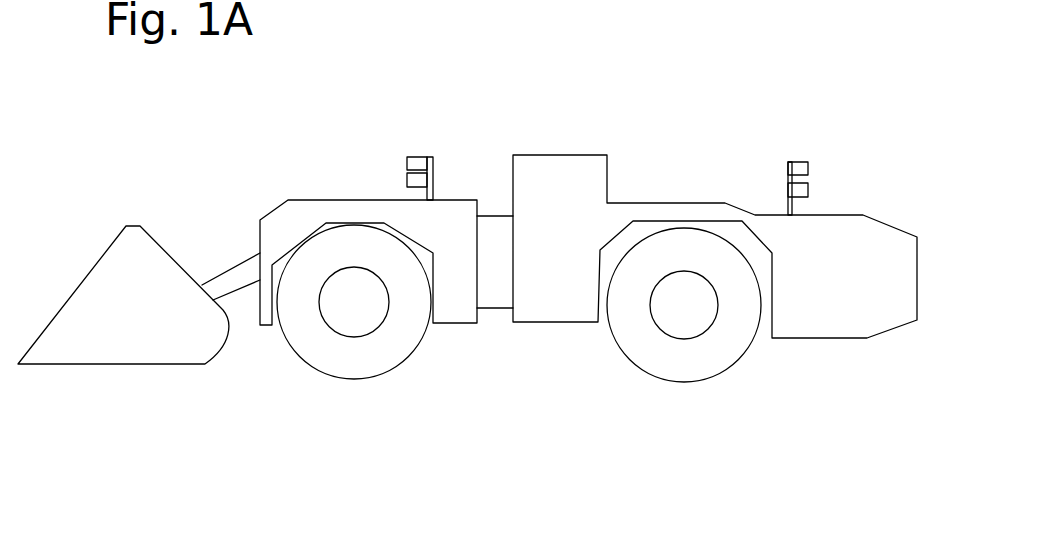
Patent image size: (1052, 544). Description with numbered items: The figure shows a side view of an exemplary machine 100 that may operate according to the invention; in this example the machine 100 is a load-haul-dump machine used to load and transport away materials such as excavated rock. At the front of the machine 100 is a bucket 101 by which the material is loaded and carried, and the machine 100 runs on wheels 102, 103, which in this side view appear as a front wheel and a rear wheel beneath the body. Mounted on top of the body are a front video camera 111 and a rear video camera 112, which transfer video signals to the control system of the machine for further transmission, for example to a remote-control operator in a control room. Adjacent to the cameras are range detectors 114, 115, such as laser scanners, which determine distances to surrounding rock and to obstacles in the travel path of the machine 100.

The machine 100 is at (824, 72).
The bucket 101 is at (125, 343).
The wheel 102 is at (353, 362).
The wheel 103 is at (680, 362).
The front video camera 111 is at (418, 160).
The rear video camera 112 is at (802, 168).
The range detector 114 is at (417, 178).
The range detector 115 is at (800, 190).